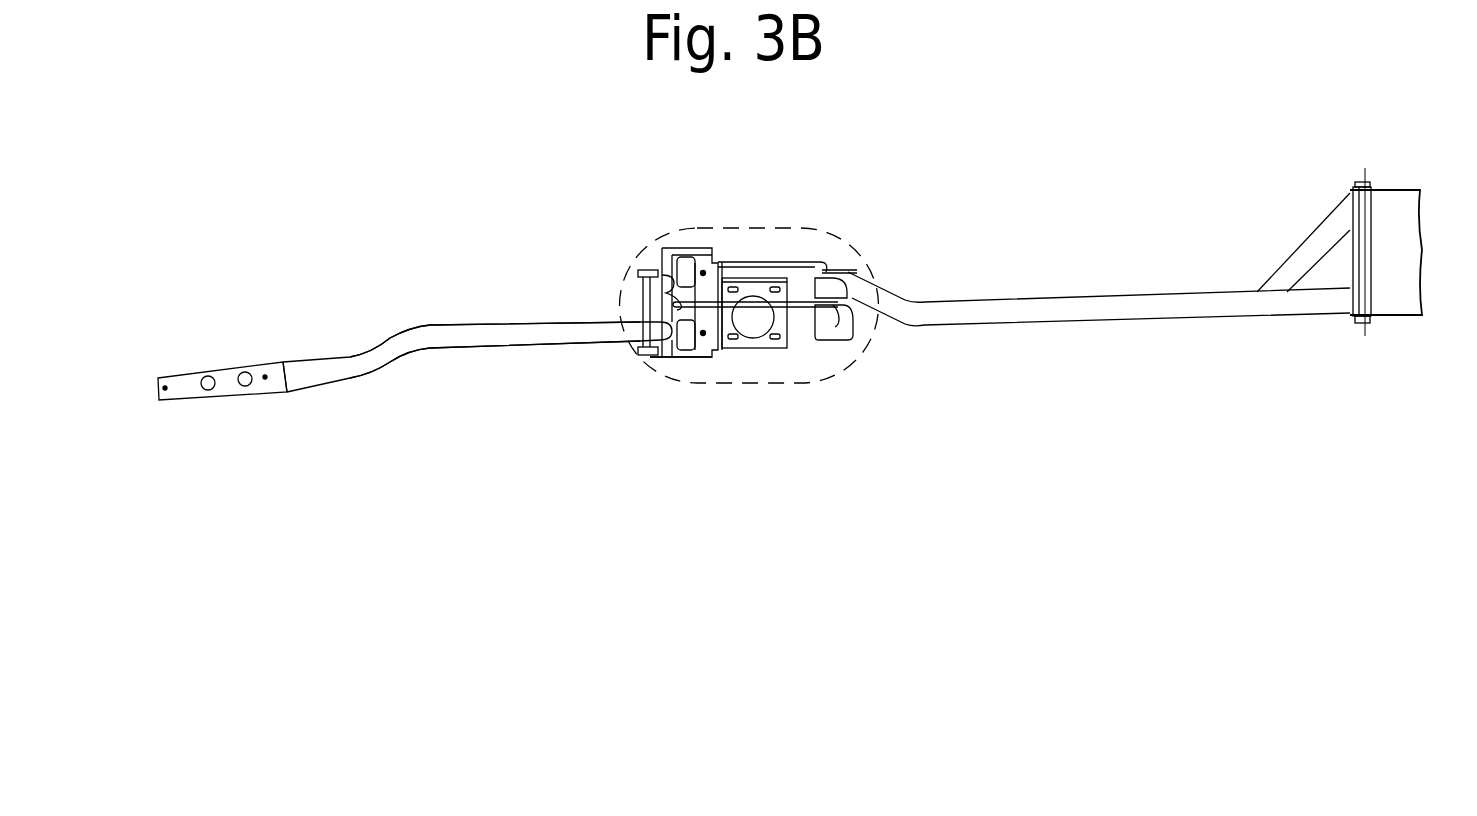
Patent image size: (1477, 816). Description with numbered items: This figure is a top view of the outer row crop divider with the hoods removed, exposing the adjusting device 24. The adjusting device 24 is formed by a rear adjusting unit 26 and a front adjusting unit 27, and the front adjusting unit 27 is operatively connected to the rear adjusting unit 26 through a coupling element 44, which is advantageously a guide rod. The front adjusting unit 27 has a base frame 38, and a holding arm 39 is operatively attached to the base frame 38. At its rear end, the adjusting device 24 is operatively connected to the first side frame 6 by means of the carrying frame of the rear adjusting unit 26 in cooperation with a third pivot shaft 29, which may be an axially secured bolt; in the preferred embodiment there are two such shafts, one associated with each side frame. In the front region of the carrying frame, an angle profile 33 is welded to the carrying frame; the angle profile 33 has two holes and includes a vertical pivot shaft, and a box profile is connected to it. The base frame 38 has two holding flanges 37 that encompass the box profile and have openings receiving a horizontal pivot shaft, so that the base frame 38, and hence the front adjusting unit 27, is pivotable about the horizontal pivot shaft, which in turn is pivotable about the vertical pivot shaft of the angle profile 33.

The adjusting device 24 is at (549, 373).
The front adjusting unit 27 is at (373, 333).
The holding arm 39 is at (447, 328).
The base frame 38 is at (656, 248).
The holding flanges 37 is at (702, 243).
The coupling element 44 is at (807, 287).
The angle profile 33 is at (713, 350).
The rear adjusting unit 26 is at (1159, 268).
The third pivot shaft 29 is at (1353, 177).
The first side frame 6 is at (1402, 287).